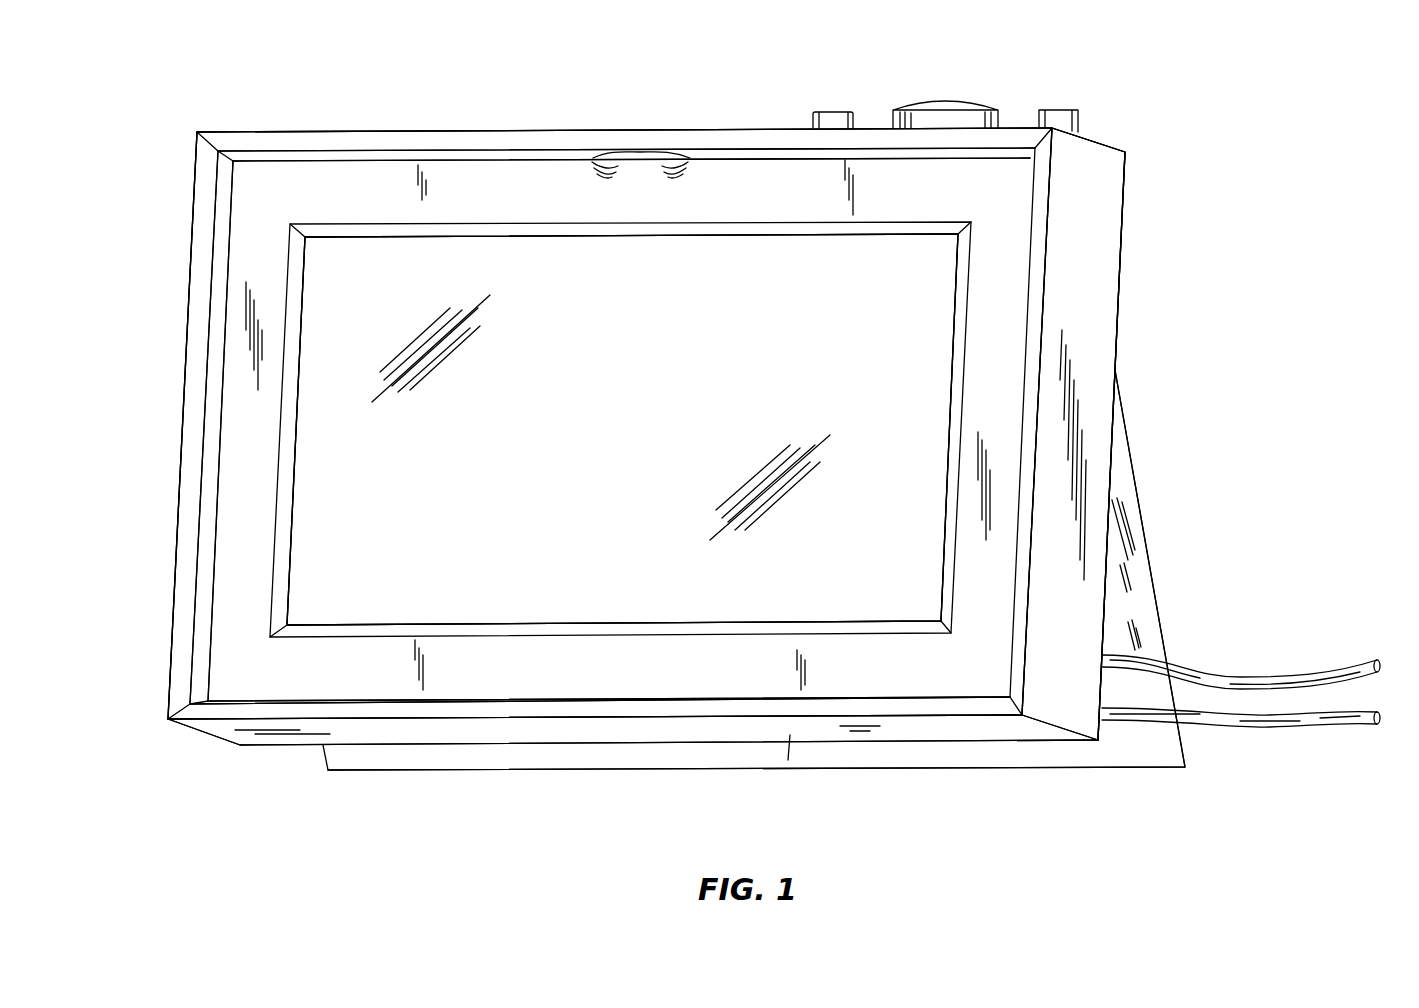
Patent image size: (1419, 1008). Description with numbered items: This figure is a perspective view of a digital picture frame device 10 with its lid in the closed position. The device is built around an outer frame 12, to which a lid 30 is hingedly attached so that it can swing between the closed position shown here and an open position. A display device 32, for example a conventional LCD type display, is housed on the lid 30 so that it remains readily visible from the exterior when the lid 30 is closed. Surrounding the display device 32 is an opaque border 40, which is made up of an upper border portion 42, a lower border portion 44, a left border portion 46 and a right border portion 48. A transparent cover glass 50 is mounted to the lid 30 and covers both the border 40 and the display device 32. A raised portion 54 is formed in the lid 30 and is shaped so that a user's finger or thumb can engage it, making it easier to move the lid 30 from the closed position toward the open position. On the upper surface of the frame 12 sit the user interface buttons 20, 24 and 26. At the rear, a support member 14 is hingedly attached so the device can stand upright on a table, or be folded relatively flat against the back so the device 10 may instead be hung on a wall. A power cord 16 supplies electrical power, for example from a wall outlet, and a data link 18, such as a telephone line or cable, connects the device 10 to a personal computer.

The digital picture frame device 10 is at (1256, 109).
The outer frame 12 is at (192, 204).
The support member 14 is at (1140, 563).
The power cord 16 is at (1279, 730).
The data link 18 is at (1275, 672).
The user interface button 20 is at (945, 100).
The user interface button 24 is at (843, 112).
The user interface button 26 is at (1068, 110).
The lid 30 is at (218, 556).
The display device 32 is at (378, 590).
The opaque border 40 is at (237, 487).
The upper border portion 42 is at (483, 185).
The lower border portion 44 is at (497, 670).
The left border portion 46 is at (237, 433).
The right border portion 48 is at (997, 302).
The transparent cover glass 50 is at (622, 590).
The raised portion 54 is at (641, 165).